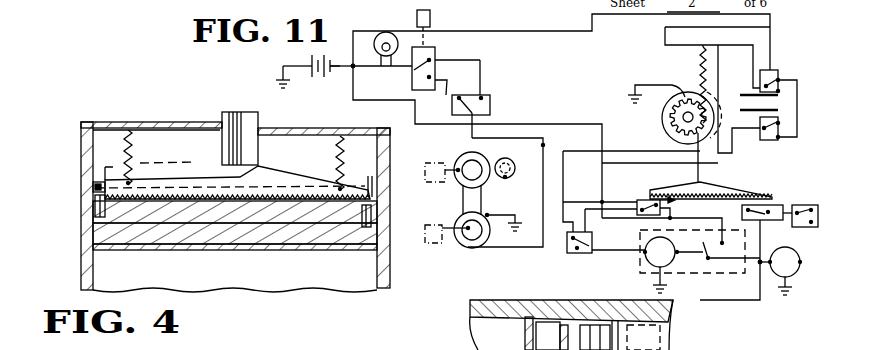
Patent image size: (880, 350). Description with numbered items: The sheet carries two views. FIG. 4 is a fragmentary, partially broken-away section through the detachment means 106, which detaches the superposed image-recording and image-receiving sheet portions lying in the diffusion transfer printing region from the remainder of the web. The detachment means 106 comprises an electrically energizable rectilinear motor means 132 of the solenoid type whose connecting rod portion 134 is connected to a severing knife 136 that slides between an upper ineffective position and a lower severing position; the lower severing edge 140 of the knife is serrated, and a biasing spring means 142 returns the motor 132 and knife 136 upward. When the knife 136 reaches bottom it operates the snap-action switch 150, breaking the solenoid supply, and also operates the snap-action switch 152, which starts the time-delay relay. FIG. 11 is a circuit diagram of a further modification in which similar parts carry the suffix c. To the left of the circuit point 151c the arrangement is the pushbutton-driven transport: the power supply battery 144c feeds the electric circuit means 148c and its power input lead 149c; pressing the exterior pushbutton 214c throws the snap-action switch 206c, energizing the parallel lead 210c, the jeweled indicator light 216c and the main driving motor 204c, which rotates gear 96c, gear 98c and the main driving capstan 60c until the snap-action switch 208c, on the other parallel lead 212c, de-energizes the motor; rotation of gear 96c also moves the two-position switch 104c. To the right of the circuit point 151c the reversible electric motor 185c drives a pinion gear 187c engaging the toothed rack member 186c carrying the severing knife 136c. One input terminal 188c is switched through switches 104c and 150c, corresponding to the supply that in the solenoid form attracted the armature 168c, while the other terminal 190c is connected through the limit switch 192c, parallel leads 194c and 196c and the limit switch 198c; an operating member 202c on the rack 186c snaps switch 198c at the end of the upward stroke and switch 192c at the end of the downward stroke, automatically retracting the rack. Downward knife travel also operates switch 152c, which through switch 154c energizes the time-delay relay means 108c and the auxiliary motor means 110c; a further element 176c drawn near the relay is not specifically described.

In FIG. 4, the rectilinear motor means 132 is at (216, 118).
In FIG. 4, the connecting rod portion 134 is at (233, 170).
In FIG. 4, the severing knife 136 is at (203, 210).
In FIG. 4, the lower severing edge 140 is at (256, 211).
In FIG. 4, the biasing spring means 142 is at (123, 157).
In FIG. 4, the two-position snap-action switch 150 is at (362, 221).
In FIG. 4, the two-position snap-action switch 152 is at (92, 210).
In FIG. 4, the detachment means 106 is at (258, 147).
In FIG. 11, the detachment means 106 is at (312, 108).
In FIG. 11, the power supply battery 144c is at (298, 57).
In FIG. 11, the electric circuit means 148c is at (351, 55).
In FIG. 11, the power input lead 149c is at (340, 70).
In FIG. 11, the jeweled indicator light 216c is at (387, 30).
In FIG. 11, the exterior pushbutton 214c is at (430, 20).
In FIG. 11, the parallel lead 212c is at (445, 61).
In FIG. 11, the two-position snap-action switch 206c is at (412, 80).
In FIG. 11, the parallel lead 210c is at (454, 116).
In FIG. 11, the two-position snap-action switch 208c is at (418, 226).
In FIG. 11, the snap-action two-position switch 104c is at (419, 163).
In FIG. 11, the gear 96c is at (493, 161).
In FIG. 11, the main driving capstan 60c is at (506, 178).
In FIG. 11, the gear 98c is at (488, 184).
In FIG. 11, the main electrically energizable driving motor 204c is at (472, 241).
In FIG. 11, the circuit point 151c is at (598, 116).
In FIG. 11, the reversible electric motor 185c is at (692, 88).
In FIG. 11, the pinion gear 187c is at (678, 84).
In FIG. 11, the motor input terminal 188c is at (664, 120).
In FIG. 11, the motor terminal 190c is at (676, 140).
In FIG. 11, the two-position snap-action switch 192c is at (774, 146).
In FIG. 11, the operating member 202c is at (743, 97).
In FIG. 11, the armature 168c is at (753, 35).
In FIG. 11, the snap-action two-position switch 198c is at (792, 69).
In FIG. 11, the parallel lead 194c is at (786, 68).
In FIG. 11, the parallel lead 196c is at (798, 123).
In FIG. 11, the toothed rack member 186c is at (716, 188).
In FIG. 11, the severing knife 136c is at (662, 190).
In FIG. 11, the two-position snap-action switch 152c is at (673, 248).
In FIG. 11, the two-position snap-action switch 150c is at (779, 196).
In FIG. 11, the two-position snap-action switch 154c is at (571, 254).
In FIG. 11, the time-delay relay means 108c is at (640, 270).
In FIG. 11, the switch 176c is at (699, 265).
In FIG. 11, the auxiliary motor means 110c is at (802, 268).